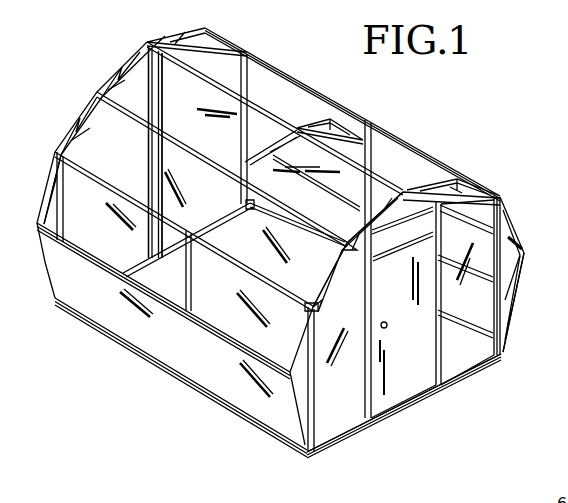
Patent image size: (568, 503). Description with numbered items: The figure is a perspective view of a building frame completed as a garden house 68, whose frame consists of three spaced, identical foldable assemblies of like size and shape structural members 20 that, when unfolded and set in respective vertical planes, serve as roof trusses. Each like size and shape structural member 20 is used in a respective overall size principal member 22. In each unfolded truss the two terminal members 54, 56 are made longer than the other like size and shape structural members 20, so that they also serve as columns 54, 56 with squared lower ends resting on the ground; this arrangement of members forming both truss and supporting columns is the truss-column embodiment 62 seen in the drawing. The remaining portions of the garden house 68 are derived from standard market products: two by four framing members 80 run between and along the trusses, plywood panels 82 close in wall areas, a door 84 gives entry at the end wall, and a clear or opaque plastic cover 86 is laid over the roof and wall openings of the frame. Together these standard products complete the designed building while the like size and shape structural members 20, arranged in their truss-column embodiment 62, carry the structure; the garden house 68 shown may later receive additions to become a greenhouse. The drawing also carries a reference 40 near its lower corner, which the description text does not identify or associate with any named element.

The like size and shape structural member 20 is at (420, 187).
The principal member 22 is at (488, 192).
The base frame 40 is at (437, 419).
The terminal member 54 is at (302, 420).
The terminal member 56 is at (508, 311).
The truss-column embodiment 62 is at (503, 281).
The garden house 68 is at (511, 197).
The two by four framing members 80 is at (164, 100).
The plywood panels 82 is at (476, 305).
The door 84 is at (419, 355).
The clear or opaque plastic cover 86 is at (289, 103).